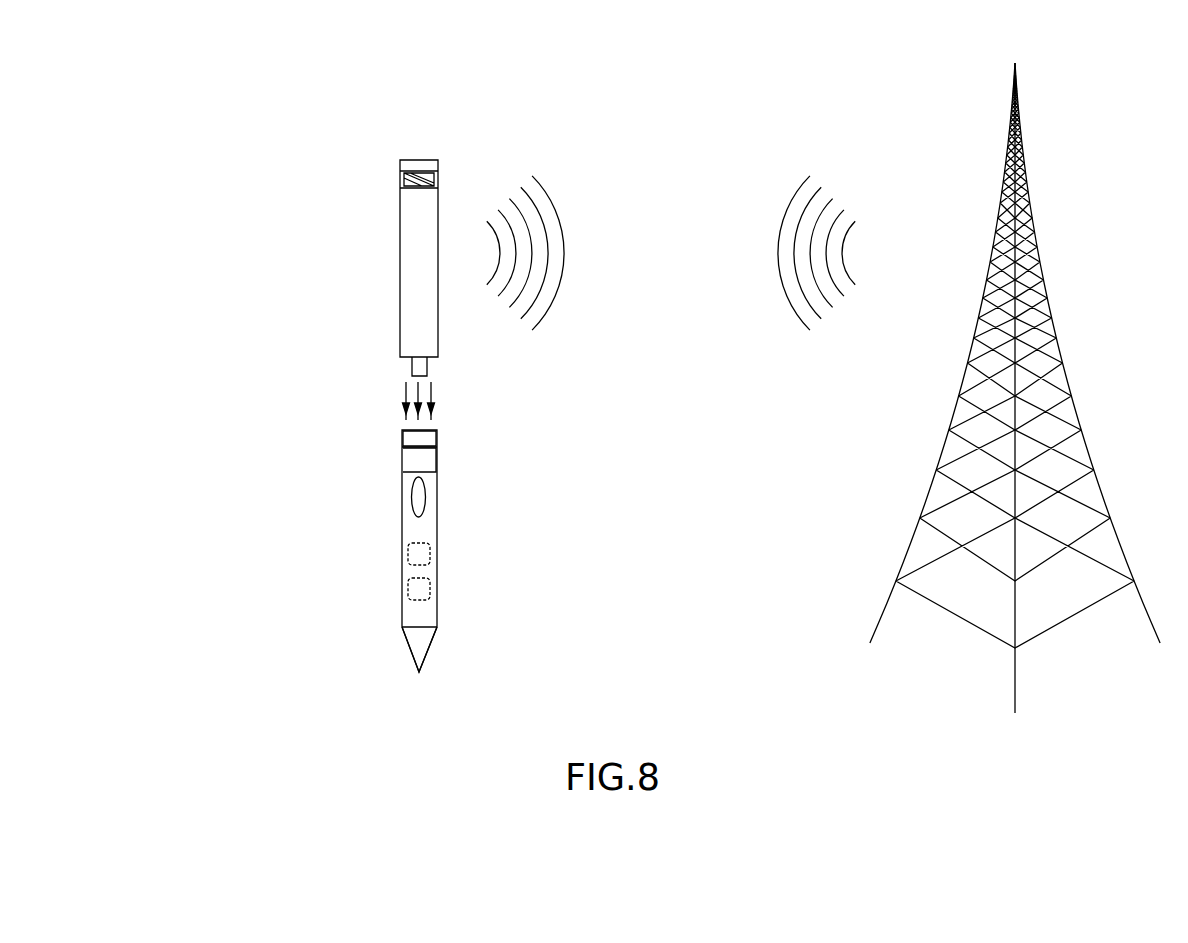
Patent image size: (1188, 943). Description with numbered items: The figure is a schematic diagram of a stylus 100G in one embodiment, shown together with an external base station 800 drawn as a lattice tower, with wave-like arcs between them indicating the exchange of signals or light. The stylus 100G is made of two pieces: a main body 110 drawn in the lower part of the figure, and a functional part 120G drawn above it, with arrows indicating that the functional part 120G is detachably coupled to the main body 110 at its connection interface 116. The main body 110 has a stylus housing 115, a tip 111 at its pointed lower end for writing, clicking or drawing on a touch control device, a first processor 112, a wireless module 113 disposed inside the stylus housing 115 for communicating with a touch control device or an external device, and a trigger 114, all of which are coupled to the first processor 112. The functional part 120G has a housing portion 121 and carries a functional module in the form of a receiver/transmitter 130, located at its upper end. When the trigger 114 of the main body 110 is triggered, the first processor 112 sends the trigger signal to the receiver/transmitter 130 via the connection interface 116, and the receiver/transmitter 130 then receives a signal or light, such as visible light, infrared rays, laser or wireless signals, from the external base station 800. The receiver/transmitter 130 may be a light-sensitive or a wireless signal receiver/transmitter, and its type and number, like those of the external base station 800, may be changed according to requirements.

The stylus 100G is at (265, 118).
The functional part 120G is at (297, 165).
The receiver/transmitter 130 is at (400, 169).
The second housing 121 is at (420, 337).
The main body 110 is at (297, 445).
The connection interface 116 is at (402, 436).
The stylus housing 115 is at (402, 462).
The trigger 114 is at (413, 496).
The wireless module 113 is at (409, 558).
The first processor 112 is at (409, 591).
The tip 111 is at (417, 643).
The external base station 800 is at (1070, 312).